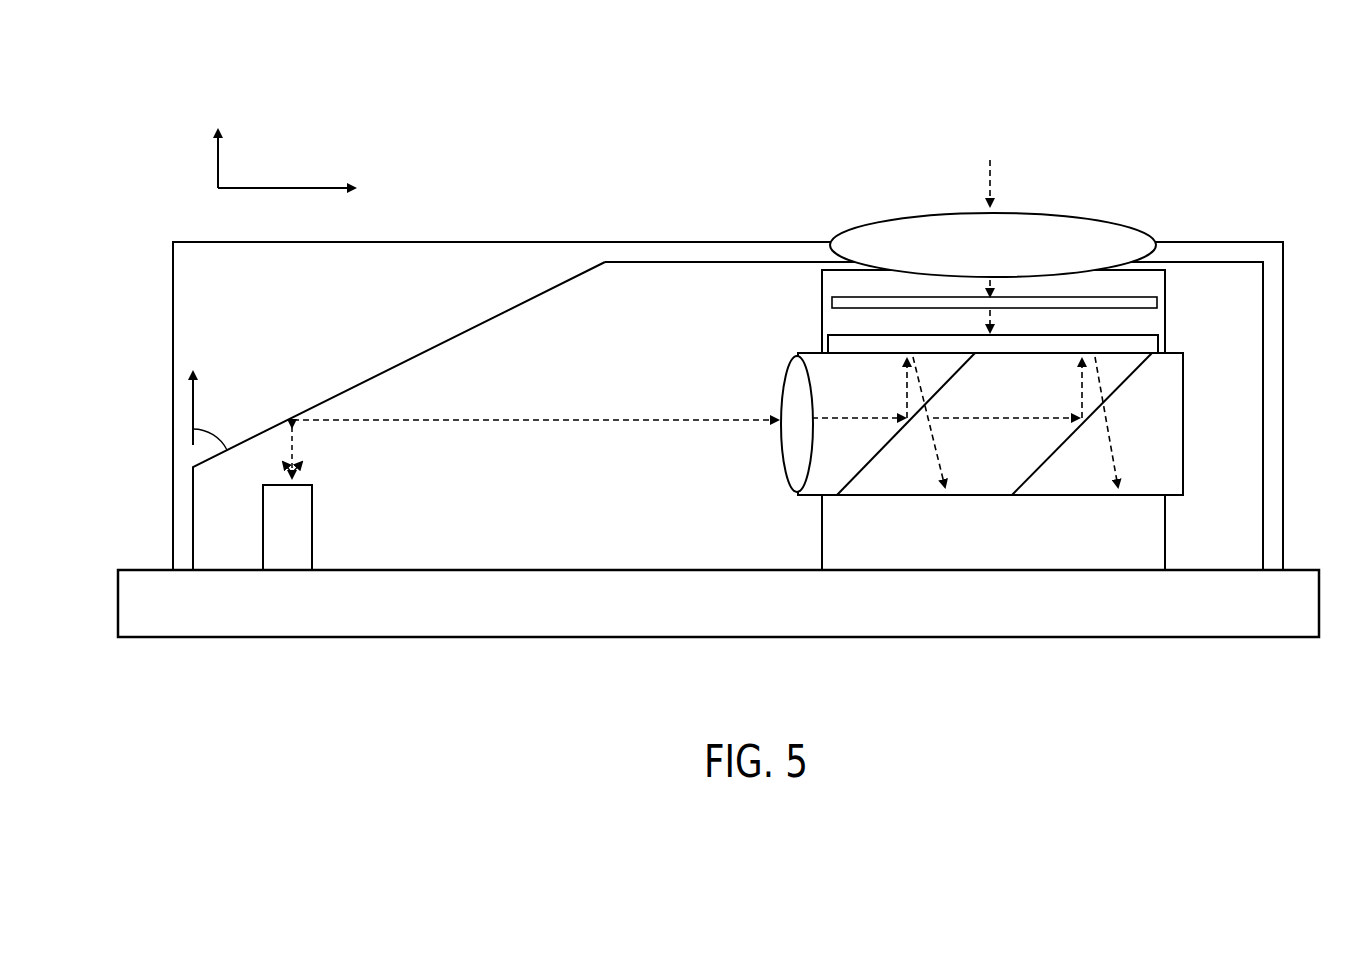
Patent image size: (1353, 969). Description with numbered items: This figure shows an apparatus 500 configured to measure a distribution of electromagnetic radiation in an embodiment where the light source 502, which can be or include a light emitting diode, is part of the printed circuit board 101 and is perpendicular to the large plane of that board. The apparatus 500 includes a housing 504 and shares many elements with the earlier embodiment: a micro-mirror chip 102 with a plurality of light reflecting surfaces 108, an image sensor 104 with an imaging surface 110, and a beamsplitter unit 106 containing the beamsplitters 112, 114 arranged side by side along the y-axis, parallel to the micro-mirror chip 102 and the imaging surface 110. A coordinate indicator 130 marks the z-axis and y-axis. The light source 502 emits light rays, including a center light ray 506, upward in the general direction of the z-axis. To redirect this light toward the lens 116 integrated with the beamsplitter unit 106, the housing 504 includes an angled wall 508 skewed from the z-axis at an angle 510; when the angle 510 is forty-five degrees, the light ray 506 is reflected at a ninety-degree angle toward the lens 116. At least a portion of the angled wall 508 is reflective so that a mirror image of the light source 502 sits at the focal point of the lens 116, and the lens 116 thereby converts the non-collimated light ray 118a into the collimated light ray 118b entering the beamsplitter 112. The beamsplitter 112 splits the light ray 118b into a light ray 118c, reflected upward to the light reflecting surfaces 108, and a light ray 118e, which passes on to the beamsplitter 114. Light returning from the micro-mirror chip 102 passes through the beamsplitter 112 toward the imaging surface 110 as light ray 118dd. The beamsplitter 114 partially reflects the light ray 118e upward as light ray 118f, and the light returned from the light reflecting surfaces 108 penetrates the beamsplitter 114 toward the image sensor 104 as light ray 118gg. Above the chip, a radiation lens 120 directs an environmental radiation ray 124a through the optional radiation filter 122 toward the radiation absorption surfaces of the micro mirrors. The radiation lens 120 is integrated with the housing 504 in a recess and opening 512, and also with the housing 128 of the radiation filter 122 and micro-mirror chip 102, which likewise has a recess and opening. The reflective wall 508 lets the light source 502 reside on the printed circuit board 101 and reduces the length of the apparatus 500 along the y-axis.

The printed circuit board 101 is at (706, 613).
The micro-mirror chip 102 is at (847, 333).
The image sensor 104 is at (822, 500).
The beamsplitter unit 106 is at (1183, 480).
The light reflecting surfaces 108 is at (936, 364).
The imaging surface 110 is at (965, 486).
The beamsplitter 112 is at (919, 505).
The beamsplitter 114 is at (1079, 505).
The lens 116 is at (782, 390).
The light ray 118a is at (562, 423).
The collimated light ray 118b is at (828, 415).
The light ray 118c is at (898, 406).
The light ray 118dd is at (915, 445).
The light ray 118e is at (1010, 414).
The light ray 118f is at (1075, 410).
The light ray 118gg is at (1130, 466).
The radiation lens 120 is at (870, 222).
The radiation filter 122 is at (1160, 302).
The environmental radiation ray 124a is at (1000, 166).
The housing 128 is at (820, 287).
The coordinate axes 130 is at (262, 188).
The apparatus 500 is at (604, 132).
The light source 502 is at (272, 538).
The housing 504 is at (485, 242).
The light ray 506 is at (297, 458).
The angled wall 508 is at (517, 306).
The angle 510 is at (232, 424).
The recess and opening 512 is at (812, 216).